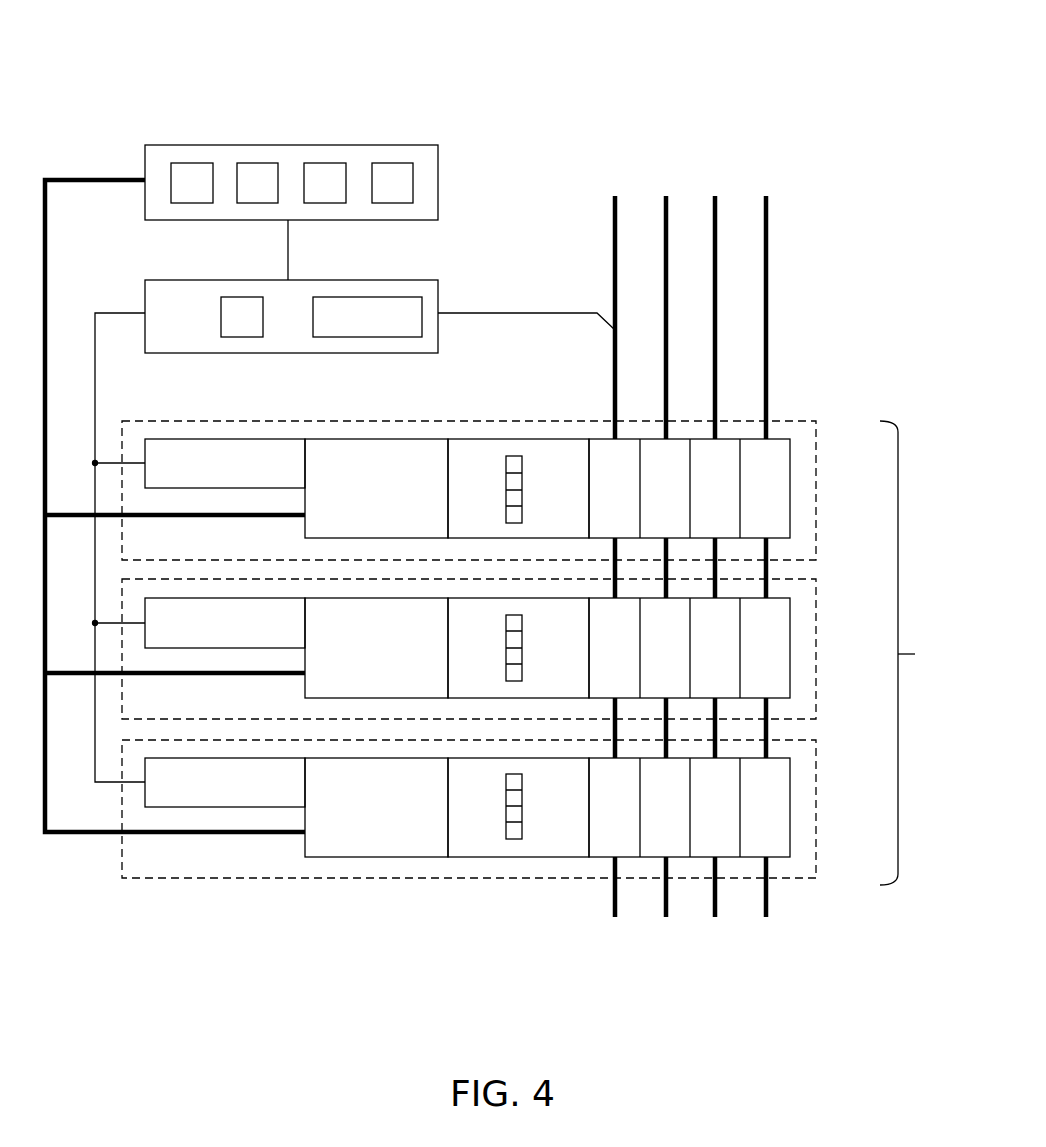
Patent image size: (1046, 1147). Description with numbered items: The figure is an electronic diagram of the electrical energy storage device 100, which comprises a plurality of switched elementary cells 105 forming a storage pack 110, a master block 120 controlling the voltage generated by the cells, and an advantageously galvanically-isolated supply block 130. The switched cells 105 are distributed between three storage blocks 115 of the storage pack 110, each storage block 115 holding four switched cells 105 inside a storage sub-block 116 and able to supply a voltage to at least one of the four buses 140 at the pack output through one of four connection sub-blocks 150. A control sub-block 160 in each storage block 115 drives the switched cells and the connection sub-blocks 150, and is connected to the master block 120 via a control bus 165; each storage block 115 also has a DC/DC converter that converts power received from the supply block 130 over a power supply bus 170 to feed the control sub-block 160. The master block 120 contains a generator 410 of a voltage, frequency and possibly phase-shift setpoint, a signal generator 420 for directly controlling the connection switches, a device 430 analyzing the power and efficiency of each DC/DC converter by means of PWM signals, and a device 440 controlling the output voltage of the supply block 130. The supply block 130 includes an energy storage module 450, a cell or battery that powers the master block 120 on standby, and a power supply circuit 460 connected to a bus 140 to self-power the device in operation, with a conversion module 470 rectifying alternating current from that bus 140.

The electrical energy storage device 100 is at (123, 78).
The switched elementary cells 105 is at (522, 514).
The storage pack 110 is at (544, 667).
The storage block 115 is at (816, 485).
The storage sub-block 116 is at (488, 457).
The master block 120 is at (327, 158).
The supply block 130 is at (327, 290).
The buses 140 is at (666, 196).
The connection sub-blocks 150 is at (610, 842).
The control sub-block 160 is at (378, 457).
The control bus 165 is at (72, 834).
The power supply bus 170 is at (117, 311).
The generator 410 is at (194, 183).
The signal generator 420 is at (260, 183).
The device for analyzing the power 430 is at (330, 183).
The device for controlling the voltage 440 is at (395, 183).
The energy storage module 450 is at (248, 318).
The power supply circuit 460 is at (572, 312).
The conversion module 470 is at (382, 318).